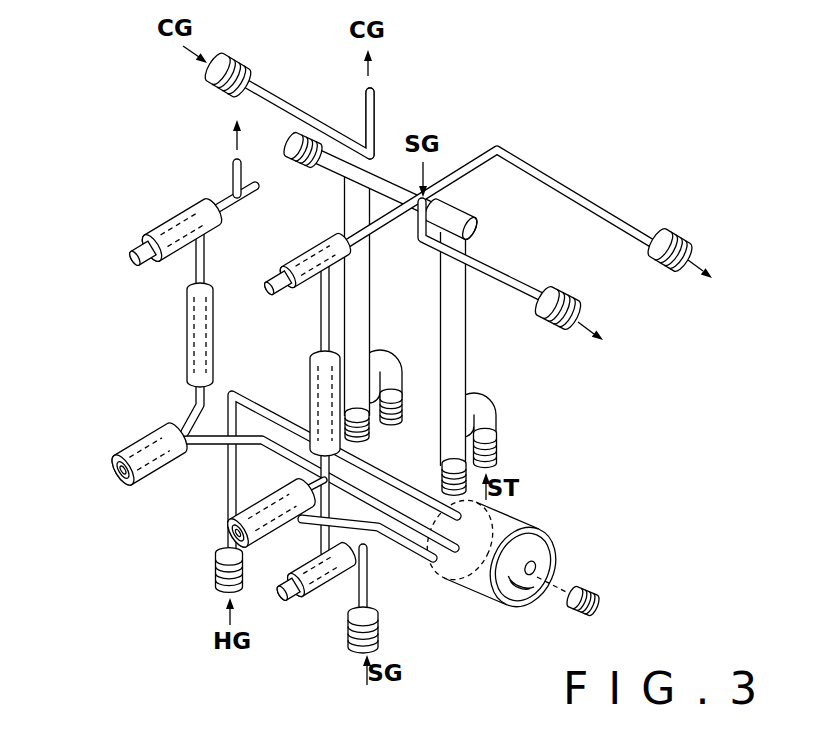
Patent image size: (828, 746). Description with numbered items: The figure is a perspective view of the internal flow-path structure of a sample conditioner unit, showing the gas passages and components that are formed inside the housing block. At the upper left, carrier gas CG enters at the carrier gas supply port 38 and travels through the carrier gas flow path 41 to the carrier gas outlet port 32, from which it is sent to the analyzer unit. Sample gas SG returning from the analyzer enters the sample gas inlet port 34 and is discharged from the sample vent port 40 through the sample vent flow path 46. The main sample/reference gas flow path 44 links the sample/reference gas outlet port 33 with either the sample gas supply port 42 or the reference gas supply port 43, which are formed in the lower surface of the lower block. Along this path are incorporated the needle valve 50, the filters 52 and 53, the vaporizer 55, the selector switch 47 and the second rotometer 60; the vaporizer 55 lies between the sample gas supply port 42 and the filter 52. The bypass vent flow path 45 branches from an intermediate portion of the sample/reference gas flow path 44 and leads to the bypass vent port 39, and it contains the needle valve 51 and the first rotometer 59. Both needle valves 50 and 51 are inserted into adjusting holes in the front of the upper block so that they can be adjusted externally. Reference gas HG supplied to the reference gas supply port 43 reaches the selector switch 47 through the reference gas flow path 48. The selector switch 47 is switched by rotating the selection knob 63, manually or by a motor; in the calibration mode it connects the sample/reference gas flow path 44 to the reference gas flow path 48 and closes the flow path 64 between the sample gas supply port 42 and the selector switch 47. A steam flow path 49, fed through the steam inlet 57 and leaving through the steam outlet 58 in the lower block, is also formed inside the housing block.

The carrier gas outlet port 32 is at (378, 92).
The sample/reference gas outlet port 33 is at (230, 180).
The sample gas inlet port 34 is at (438, 203).
The carrier gas supply port 38 is at (226, 58).
The bypass vent port 39 is at (670, 268).
The sample vent port 40 is at (562, 328).
The carrier gas flow path 41 is at (330, 106).
The sample gas supply port 42 is at (380, 632).
The reference gas supply port 43 is at (222, 590).
The sample/reference gas flow path 44 is at (252, 198).
The bypass vent flow path 45 is at (604, 205).
The sample vent flow path 46 is at (522, 300).
The selector switch 47 is at (540, 546).
The reference gas flow path 48 is at (404, 488).
The steam flow path 49 is at (462, 364).
The needle valve 50 is at (170, 222).
The needle valve 51 is at (284, 264).
The filter 52 is at (216, 545).
The filter 53 is at (152, 492).
The vaporizer 55 is at (318, 606).
The steam inlet 57 is at (500, 455).
The steam outlet 58 is at (404, 392).
The first rotometer 59 is at (306, 386).
The second rotometer 60 is at (216, 340).
The selection knob 63 is at (598, 596).
The flow path 64 is at (398, 550).